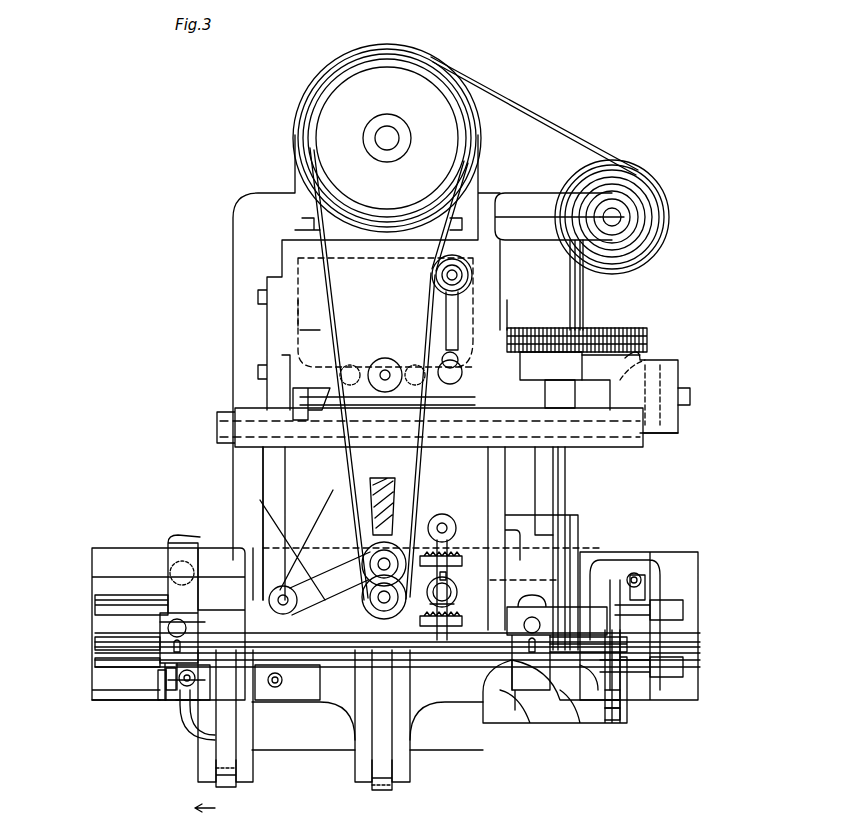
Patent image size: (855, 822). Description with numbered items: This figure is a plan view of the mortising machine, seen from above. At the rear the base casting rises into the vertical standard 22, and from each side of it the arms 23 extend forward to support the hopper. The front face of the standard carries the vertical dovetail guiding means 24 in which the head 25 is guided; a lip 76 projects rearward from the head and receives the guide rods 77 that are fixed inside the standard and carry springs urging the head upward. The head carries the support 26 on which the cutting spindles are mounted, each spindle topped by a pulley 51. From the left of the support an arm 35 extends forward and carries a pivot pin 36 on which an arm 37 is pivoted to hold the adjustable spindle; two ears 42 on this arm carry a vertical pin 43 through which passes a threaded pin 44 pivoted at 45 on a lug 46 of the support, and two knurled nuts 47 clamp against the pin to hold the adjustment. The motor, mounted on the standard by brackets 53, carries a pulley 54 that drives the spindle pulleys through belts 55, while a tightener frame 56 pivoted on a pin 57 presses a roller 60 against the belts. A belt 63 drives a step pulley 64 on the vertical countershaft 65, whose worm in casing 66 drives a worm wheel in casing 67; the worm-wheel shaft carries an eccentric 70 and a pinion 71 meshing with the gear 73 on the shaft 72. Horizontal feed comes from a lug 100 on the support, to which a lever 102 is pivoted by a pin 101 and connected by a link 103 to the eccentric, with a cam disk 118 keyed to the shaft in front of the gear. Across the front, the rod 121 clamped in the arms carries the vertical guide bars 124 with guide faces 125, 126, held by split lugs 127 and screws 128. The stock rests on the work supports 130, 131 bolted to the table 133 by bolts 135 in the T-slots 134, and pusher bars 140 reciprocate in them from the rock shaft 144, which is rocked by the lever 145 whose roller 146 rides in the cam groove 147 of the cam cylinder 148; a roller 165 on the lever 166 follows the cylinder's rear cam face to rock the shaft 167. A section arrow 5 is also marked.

The section arrow 5 is at (208, 811).
The vertical standard 22 is at (295, 268).
The arms 23 is at (232, 470).
The vertical dovetail guiding means 24 is at (296, 395).
The head 25 is at (240, 400).
The support 26 is at (262, 460).
The arm 35 is at (318, 520).
The pivot pin 36 is at (280, 590).
The arm 37 is at (360, 585).
The ears 42 is at (457, 592).
The vertical pin 43 is at (453, 605).
The threaded pin 44 is at (450, 559).
The pivot 45 is at (445, 515).
The lug 46 is at (432, 512).
The knurled nuts 47 is at (452, 578).
The pulleys 51 is at (362, 600).
The brackets 53 is at (462, 78).
The pulley 54 is at (428, 74).
The belts 55 is at (311, 322).
The frame 56 is at (448, 310).
The pin 57 is at (442, 356).
The roller 60 is at (432, 272).
The belt 63 is at (535, 137).
The step pulley 64 is at (652, 178).
The vertical countershaft 65 is at (618, 215).
The casing 66 is at (640, 226).
The casing 67 is at (540, 202).
The eccentric 70 is at (605, 334).
The pinion 71 is at (575, 328).
The shaft 72 is at (566, 493).
The gear 73 is at (640, 334).
The lip 76 is at (345, 368).
The guide rods 77 is at (378, 365).
The lug 100 is at (660, 363).
The pin 101 is at (665, 433).
The lever 102 is at (683, 390).
The link 103 is at (600, 392).
The cam disk 118 is at (645, 345).
The rod 121 is at (110, 640).
The vertical guide bars 124 is at (163, 680).
The guide face 125 is at (160, 676).
The guide face 126 is at (180, 700).
The split lugs 127 is at (168, 622).
The screws 128 is at (185, 622).
The work support 130 is at (400, 762).
The work support 131 is at (242, 758).
The table 133 is at (110, 692).
The T-slots 134 is at (98, 575).
The bolts 135 is at (278, 690).
The pusher bars 140 is at (225, 780).
The rock shaft 144 is at (100, 660).
The lever 145 is at (622, 695).
The roller 146 is at (622, 705).
The cam groove 147 is at (620, 715).
The cam cylinder 148 is at (565, 722).
The roller 165 is at (608, 575).
The lever 166 is at (640, 572).
The rock shaft 167 is at (95, 603).